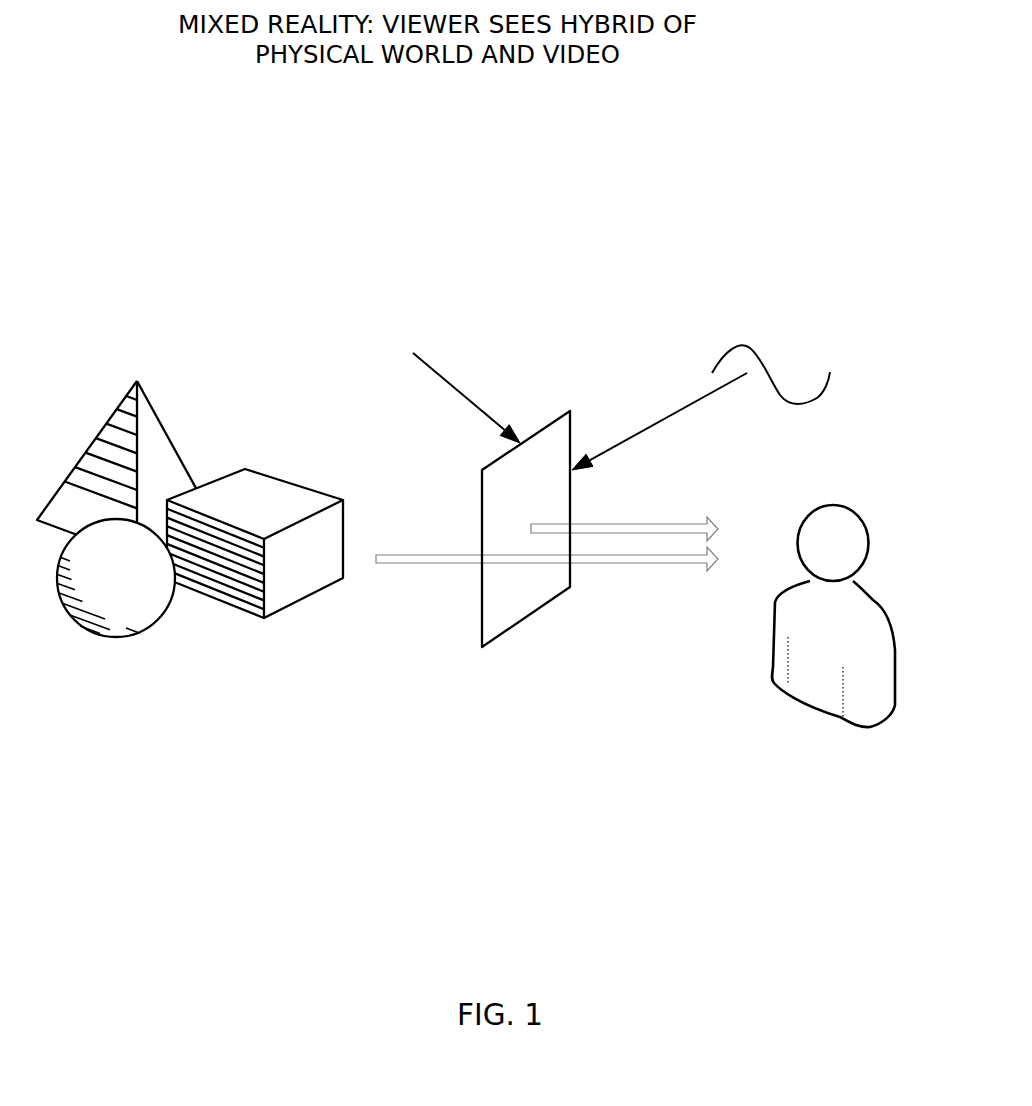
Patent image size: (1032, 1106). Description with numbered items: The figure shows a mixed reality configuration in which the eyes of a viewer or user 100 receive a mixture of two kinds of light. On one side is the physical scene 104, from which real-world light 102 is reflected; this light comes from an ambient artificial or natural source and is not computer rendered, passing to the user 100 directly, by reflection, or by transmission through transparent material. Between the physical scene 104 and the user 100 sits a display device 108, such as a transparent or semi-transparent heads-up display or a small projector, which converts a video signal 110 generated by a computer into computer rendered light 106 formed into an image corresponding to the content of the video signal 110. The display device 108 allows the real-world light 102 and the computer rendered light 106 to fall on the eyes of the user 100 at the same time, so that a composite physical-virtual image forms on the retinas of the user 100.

The user 100 is at (863, 785).
The real-world light 102 is at (423, 563).
The physical scene 104 is at (158, 727).
The computer rendered light 106 is at (642, 533).
The display device 108 is at (570, 411).
The video signal 110 is at (817, 398).